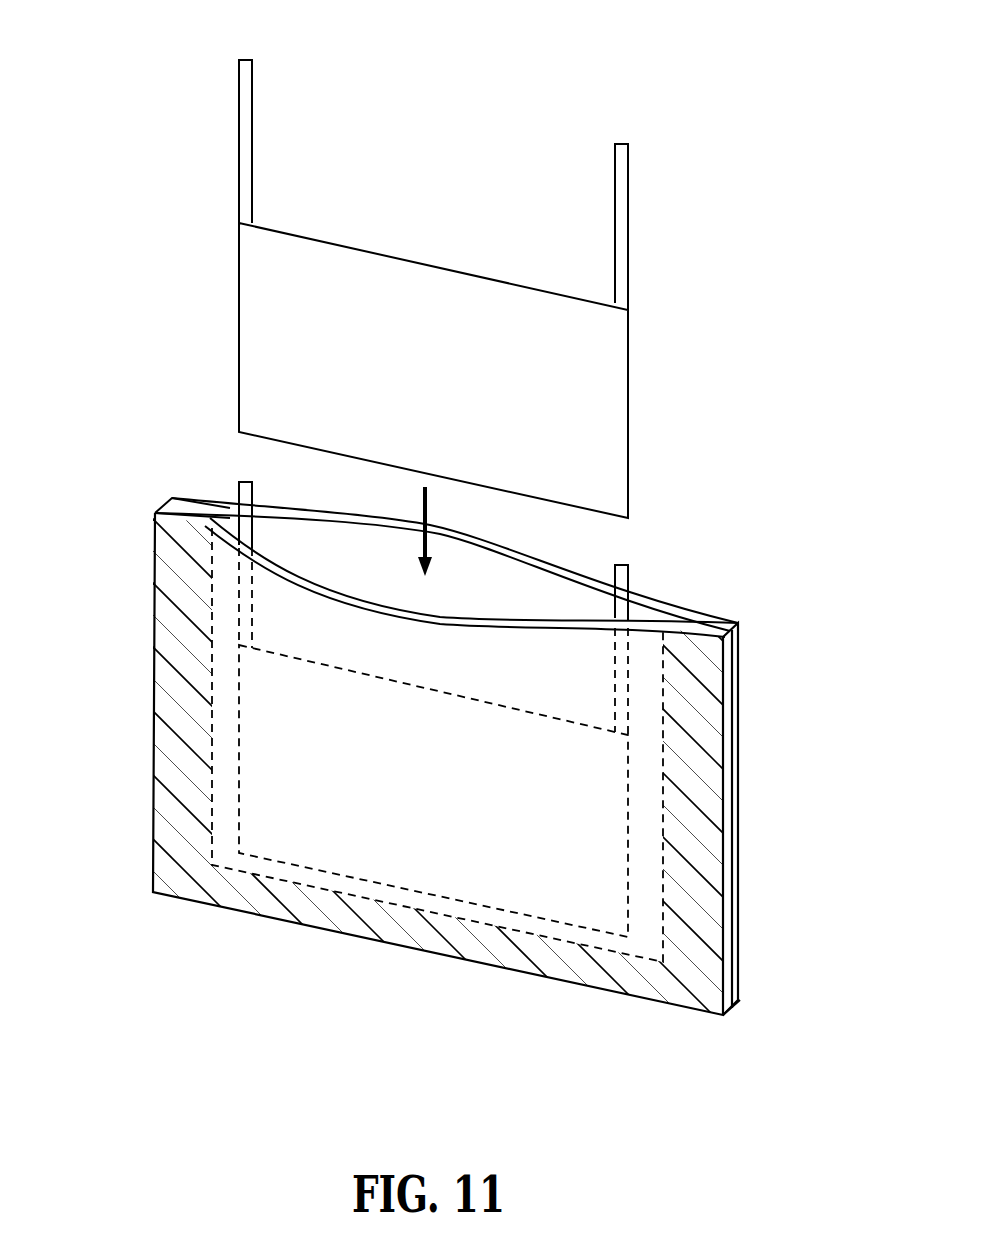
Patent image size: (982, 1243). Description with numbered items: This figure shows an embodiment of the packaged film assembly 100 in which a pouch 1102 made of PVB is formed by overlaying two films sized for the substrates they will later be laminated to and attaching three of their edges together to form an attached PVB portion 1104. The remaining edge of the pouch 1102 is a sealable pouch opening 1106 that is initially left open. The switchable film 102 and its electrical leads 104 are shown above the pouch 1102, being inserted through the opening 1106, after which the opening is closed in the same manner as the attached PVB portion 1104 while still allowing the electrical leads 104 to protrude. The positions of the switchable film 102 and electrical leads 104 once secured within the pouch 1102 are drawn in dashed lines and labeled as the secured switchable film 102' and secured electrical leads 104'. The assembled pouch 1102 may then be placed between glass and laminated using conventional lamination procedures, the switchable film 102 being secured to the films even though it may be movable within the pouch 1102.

The packaged film assembly 100 is at (730, 76).
The switchable film 102 is at (463, 370).
The electrical leads 104 is at (463, 185).
The switchable film (secured position) 102' is at (433, 836).
The electrical leads (secured position) 104' is at (465, 608).
The pouch 1102 is at (735, 764).
The attached PVB portion 1104 is at (173, 733).
The sealable pouch opening 1106 is at (367, 626).